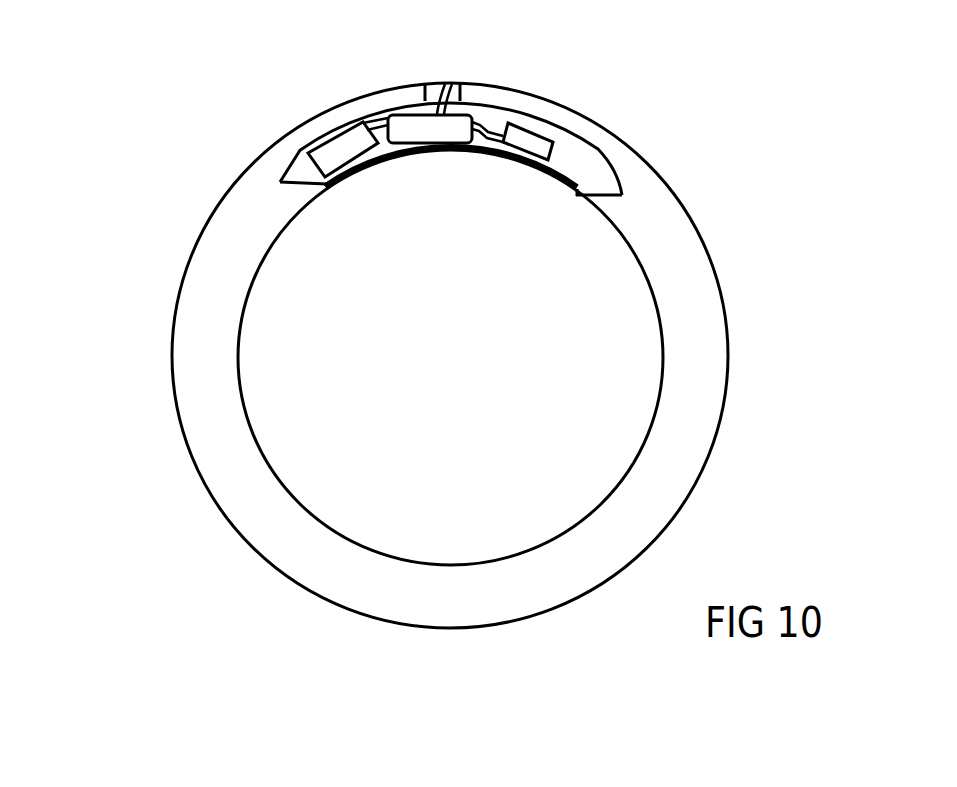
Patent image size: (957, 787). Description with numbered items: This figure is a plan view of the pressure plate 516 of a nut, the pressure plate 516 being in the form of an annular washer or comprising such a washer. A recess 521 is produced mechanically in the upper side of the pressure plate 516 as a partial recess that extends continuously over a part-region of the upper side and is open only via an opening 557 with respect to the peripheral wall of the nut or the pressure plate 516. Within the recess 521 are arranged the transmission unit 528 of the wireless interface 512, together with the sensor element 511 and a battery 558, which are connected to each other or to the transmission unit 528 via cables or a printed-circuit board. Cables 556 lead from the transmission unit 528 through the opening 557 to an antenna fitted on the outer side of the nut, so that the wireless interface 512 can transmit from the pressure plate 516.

The pressure plate 516 is at (166, 208).
The wireless interface 512 is at (408, 183).
The recess 521 is at (582, 158).
The sensor element 511 is at (540, 138).
The transmission unit 528 is at (427, 130).
The battery 558 is at (340, 150).
The opening 557 is at (422, 90).
The cables 556 is at (460, 76).